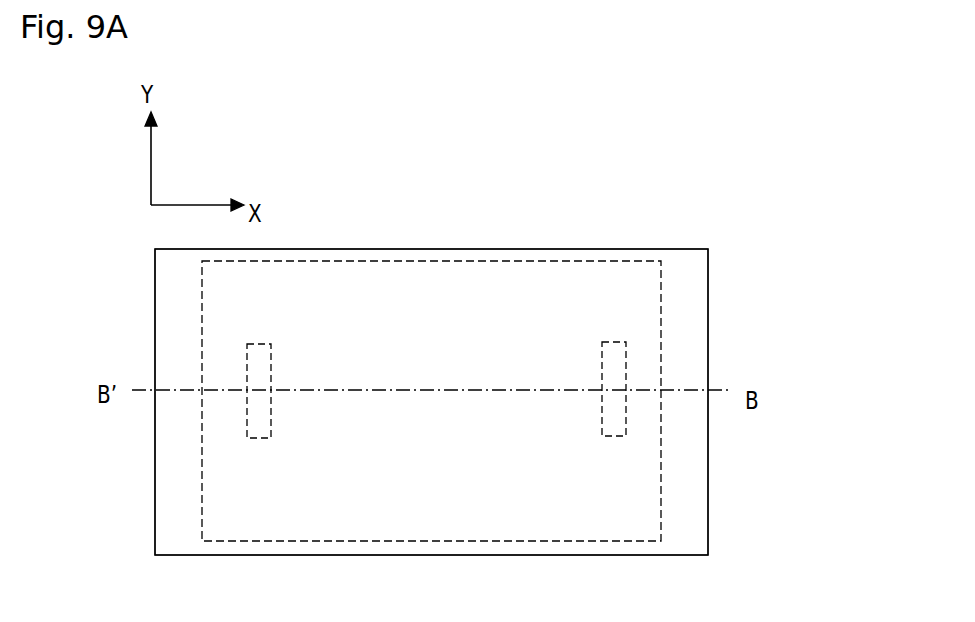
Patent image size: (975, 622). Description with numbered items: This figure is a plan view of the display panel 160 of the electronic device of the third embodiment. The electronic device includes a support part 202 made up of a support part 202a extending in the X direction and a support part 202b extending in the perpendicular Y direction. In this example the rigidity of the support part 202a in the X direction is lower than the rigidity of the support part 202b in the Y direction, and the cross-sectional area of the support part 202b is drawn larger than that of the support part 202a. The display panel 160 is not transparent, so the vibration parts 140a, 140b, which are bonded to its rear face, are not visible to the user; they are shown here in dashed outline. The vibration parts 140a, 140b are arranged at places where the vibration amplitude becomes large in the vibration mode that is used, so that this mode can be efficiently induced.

The support part 202 is at (693, 159).
The support part 202a is at (617, 250).
The support part 202b is at (695, 350).
The display panel 160 is at (628, 496).
The vibration part 140a is at (261, 398).
The vibration part 140b is at (615, 383).